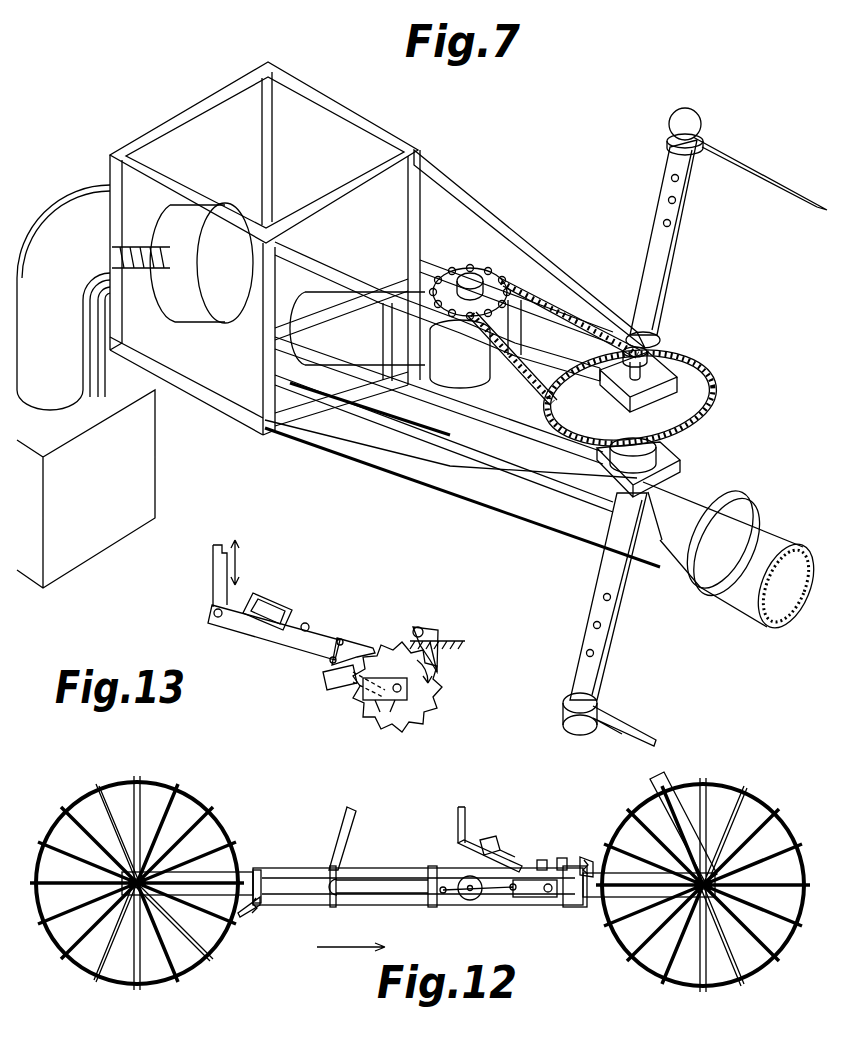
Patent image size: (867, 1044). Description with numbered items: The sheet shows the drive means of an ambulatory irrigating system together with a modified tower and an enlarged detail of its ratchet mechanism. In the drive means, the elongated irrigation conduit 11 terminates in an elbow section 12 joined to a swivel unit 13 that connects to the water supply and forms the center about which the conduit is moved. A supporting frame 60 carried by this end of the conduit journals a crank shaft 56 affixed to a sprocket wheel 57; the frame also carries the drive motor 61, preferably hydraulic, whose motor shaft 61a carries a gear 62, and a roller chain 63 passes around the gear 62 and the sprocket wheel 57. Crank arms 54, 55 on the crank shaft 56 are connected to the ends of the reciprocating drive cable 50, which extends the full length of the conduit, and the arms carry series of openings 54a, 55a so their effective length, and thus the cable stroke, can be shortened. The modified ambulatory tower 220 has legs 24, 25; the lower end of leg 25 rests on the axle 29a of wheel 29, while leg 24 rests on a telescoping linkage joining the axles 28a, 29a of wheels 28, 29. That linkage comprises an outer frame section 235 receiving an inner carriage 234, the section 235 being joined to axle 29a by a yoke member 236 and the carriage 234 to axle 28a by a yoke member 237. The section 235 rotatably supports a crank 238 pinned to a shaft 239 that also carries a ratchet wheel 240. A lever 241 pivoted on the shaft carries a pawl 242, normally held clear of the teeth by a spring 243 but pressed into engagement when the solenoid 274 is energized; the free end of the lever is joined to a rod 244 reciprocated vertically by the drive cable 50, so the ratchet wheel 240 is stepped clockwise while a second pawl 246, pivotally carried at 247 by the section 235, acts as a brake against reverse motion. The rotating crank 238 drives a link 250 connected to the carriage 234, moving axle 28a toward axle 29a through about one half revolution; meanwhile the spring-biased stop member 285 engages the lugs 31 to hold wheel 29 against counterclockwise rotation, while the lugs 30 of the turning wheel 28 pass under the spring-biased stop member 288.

In FIG. 7, the elongated irrigation conduit 11 is at (773, 533).
In FIG. 7, the elbow section 12 is at (66, 199).
In FIG. 7, the swivel unit 13 is at (146, 483).
In FIG. 7, the reciprocating drive cable 50 is at (818, 213).
In FIG. 7, the crank arm 54 is at (667, 293).
In FIG. 7, the openings 54a is at (667, 222).
In FIG. 7, the crank arm 55 is at (617, 590).
In FIG. 7, the openings 55a is at (595, 625).
In FIG. 7, the crank shaft 56 is at (657, 335).
In FIG. 7, the sprocket wheel 57 is at (693, 390).
In FIG. 7, the supporting frame 60 is at (486, 205).
In FIG. 7, the drive motor 61 is at (452, 375).
In FIG. 7, the motor shaft 61a is at (470, 278).
In FIG. 7, the gear 62 is at (517, 283).
In FIG. 7, the roller chain 63 is at (520, 310).
In FIG. 12, the leg 24 is at (341, 823).
In FIG. 12, the leg 25 is at (660, 783).
In FIG. 12, the wheel 28 is at (77, 808).
In FIG. 12, the axle 28a is at (117, 957).
In FIG. 12, the wheel 29 is at (762, 803).
In FIG. 12, the axle 29a is at (733, 907).
In FIG. 12, the lugs 30 is at (137, 782).
In FIG. 12, the lugs 31 is at (740, 790).
In FIG. 12, the modified ambulatory tower 220 is at (425, 819).
In FIG. 12, the carriage 234 is at (373, 892).
In FIG. 13, the outer frame section 235 is at (463, 642).
In FIG. 12, the outer frame section 235 is at (453, 903).
In FIG. 12, the yoke member 236 is at (597, 890).
In FIG. 12, the yoke member 237 is at (227, 877).
In FIG. 13, the crank 238 is at (373, 705).
In FIG. 12, the crank 238 is at (513, 890).
In FIG. 13, the shaft 239 is at (380, 708).
In FIG. 12, the shaft 239 is at (548, 890).
In FIG. 13, the ratchet wheel 240 is at (432, 712).
In FIG. 12, the ratchet wheel 240 is at (547, 862).
In FIG. 13, the lever 241 is at (253, 628).
In FIG. 12, the lever 241 is at (452, 843).
In FIG. 13, the pawl 242 is at (360, 642).
In FIG. 13, the spring 243 is at (343, 685).
In FIG. 13, the rod 244 is at (215, 578).
In FIG. 12, the rod 244 is at (462, 805).
In FIG. 13, the second pawl 246 is at (445, 630).
In FIG. 13, the pivot 247 is at (418, 628).
In FIG. 12, the link 250 is at (462, 880).
In FIG. 13, the solenoid 274 is at (270, 595).
In FIG. 12, the solenoid 274 is at (488, 840).
In FIG. 12, the stop member 285 is at (587, 857).
In FIG. 12, the stop member 288 is at (250, 913).